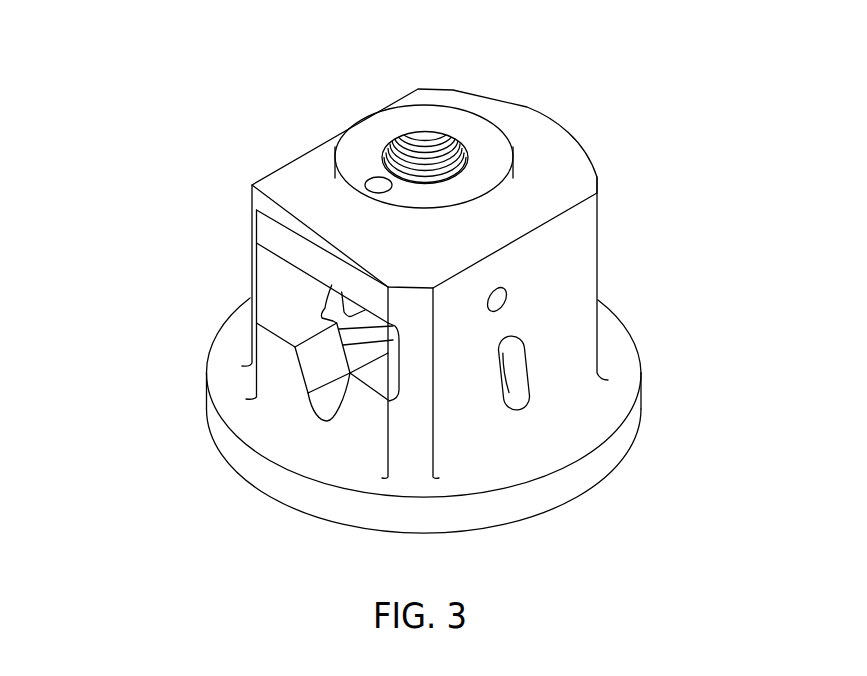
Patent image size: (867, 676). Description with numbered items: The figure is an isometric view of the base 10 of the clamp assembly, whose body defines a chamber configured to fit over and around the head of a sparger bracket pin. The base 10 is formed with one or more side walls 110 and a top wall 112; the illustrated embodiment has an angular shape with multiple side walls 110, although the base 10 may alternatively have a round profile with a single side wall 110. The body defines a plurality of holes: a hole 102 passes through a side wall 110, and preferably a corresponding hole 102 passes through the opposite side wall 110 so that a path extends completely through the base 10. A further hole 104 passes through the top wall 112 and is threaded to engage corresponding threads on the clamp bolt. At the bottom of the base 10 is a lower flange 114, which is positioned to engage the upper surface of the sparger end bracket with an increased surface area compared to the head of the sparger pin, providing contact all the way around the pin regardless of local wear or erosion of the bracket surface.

The base 10 is at (726, 130).
The hole 102 is at (288, 289).
The hole 104 is at (404, 139).
The side wall 110 is at (575, 260).
The top wall 112 is at (302, 190).
The lower flange 114 is at (252, 467).